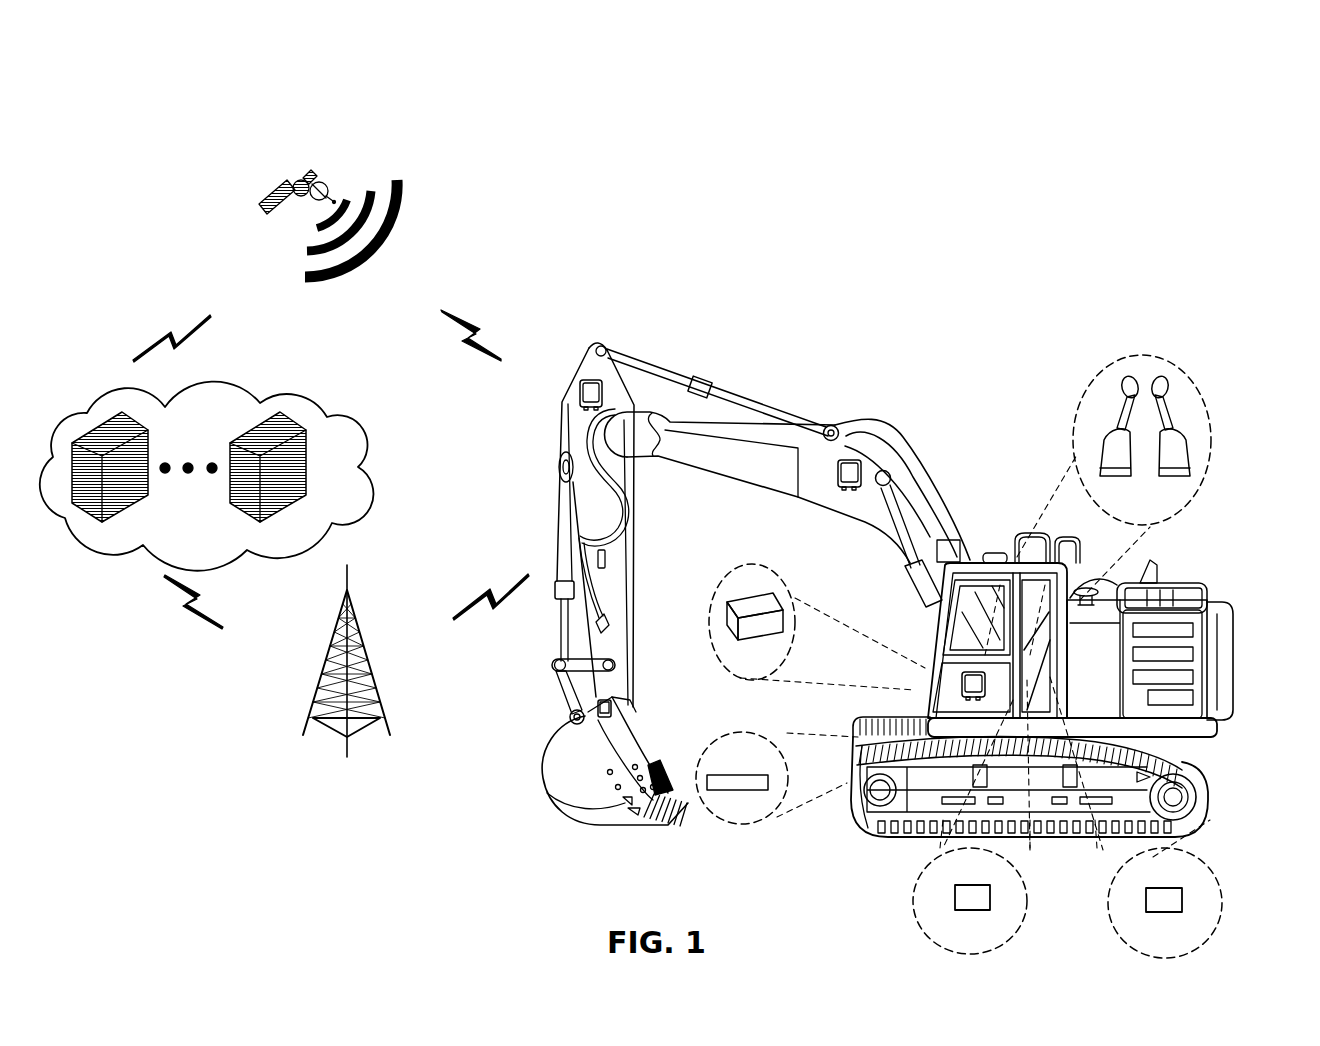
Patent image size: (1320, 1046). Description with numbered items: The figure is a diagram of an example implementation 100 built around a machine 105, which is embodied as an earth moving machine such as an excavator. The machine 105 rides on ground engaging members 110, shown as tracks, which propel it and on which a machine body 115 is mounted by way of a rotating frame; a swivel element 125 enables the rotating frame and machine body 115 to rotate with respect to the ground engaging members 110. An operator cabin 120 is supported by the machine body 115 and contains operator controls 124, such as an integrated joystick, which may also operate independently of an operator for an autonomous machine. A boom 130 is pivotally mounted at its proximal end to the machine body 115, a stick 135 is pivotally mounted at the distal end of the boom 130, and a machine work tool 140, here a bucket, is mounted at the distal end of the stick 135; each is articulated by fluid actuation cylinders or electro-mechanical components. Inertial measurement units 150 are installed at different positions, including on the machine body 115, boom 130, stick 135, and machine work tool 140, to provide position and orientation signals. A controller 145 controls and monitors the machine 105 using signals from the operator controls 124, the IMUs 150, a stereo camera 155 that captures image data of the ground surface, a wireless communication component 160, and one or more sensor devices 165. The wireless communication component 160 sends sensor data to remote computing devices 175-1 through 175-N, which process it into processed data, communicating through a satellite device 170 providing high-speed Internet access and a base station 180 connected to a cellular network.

The example implementation 100 is at (172, 66).
The machine 105 is at (840, 290).
The ground engaging members 110 is at (1205, 798).
The machine body 115 is at (1233, 663).
The operator cabin 120 is at (908, 597).
The operator controls 124 is at (1172, 362).
The swivel element 125 is at (727, 822).
The boom 130 is at (845, 503).
The stick 135 is at (617, 598).
The machine work tool 140 is at (583, 797).
The controller 145 is at (740, 678).
The inertial measurement unit 150 is at (592, 378).
The stereo camera 155 is at (897, 455).
The wireless communication component 160 is at (1030, 905).
The sensor device 165 is at (1218, 884).
The satellite device 170 is at (325, 223).
The computing device 175-1 is at (128, 477).
The computing device 175-N is at (277, 477).
The base station 180 is at (346, 685).